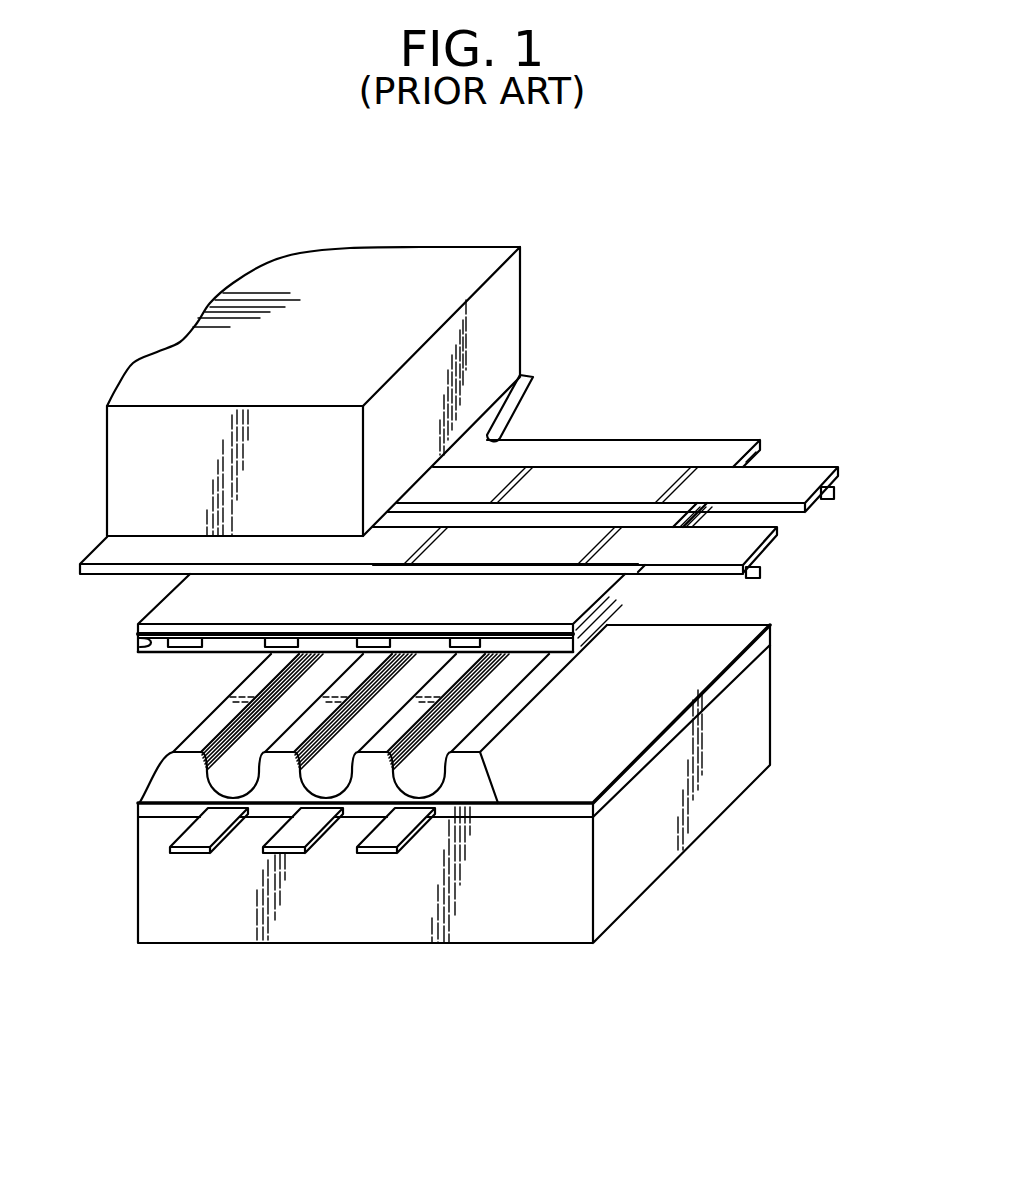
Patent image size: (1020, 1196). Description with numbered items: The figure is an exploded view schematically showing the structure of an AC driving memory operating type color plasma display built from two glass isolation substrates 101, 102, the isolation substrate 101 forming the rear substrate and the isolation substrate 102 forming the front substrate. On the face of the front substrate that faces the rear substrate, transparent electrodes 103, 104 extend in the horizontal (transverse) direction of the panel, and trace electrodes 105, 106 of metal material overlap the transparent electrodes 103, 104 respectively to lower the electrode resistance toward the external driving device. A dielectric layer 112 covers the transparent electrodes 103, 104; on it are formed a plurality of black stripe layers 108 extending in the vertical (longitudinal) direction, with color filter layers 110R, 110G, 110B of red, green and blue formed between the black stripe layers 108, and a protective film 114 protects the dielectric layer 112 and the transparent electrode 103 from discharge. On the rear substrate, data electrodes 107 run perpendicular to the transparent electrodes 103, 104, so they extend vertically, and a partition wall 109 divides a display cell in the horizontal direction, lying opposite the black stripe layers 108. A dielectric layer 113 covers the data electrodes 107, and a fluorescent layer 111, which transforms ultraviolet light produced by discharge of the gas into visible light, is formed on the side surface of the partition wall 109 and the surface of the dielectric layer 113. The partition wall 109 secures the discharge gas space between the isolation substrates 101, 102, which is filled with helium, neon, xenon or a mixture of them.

The isolation substrate 101 is at (640, 847).
The isolation substrate 102 is at (437, 273).
The transparent electrode 103 is at (742, 541).
The transparent electrode 104 is at (788, 480).
The trace electrode 105 is at (757, 569).
The trace electrode 106 is at (840, 491).
The data electrode 107 is at (377, 852).
The black stripe layer 108 is at (467, 642).
The partition wall 109 is at (467, 780).
The color filter layer 110R is at (156, 650).
The color filter layer 110G is at (233, 642).
The color filter layer 110B is at (333, 640).
The fluorescent layer 111 is at (247, 795).
The dielectric layer 112 is at (187, 608).
The dielectric layer 113 is at (147, 805).
The protective film 114 is at (157, 655).